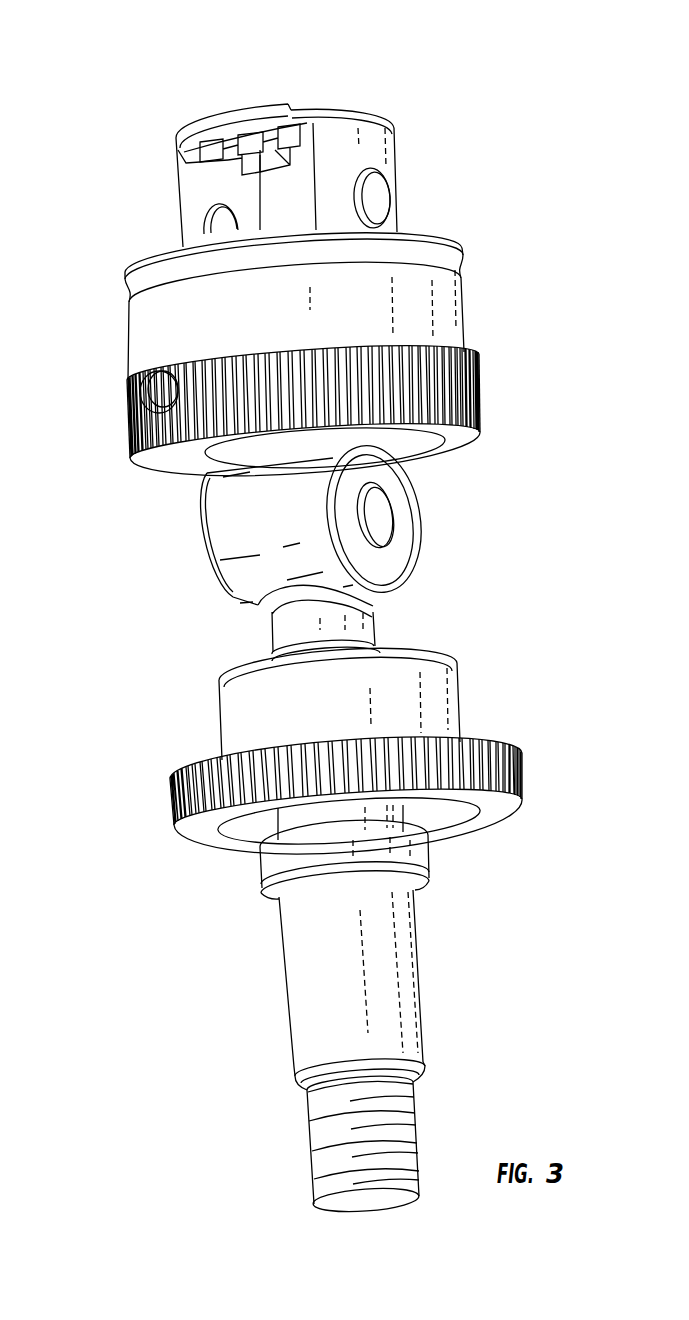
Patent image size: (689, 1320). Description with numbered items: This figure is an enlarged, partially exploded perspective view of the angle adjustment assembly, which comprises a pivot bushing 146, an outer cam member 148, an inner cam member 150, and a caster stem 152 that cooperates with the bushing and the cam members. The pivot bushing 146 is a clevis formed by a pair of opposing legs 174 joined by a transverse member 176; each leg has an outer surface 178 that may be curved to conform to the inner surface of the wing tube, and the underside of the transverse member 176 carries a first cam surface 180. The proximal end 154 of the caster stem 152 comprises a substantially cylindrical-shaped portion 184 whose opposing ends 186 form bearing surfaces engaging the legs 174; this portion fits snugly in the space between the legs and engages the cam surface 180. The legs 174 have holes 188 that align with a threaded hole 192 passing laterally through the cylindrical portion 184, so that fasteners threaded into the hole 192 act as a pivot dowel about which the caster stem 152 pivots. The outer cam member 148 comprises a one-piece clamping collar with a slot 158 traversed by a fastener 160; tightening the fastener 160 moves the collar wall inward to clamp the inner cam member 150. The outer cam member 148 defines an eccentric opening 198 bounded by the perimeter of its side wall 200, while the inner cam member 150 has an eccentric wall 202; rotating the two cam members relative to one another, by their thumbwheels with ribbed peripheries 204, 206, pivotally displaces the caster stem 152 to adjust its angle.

The pivot bushing 146 is at (288, 147).
The outer cam member 148 is at (311, 370).
The inner cam member 150 is at (412, 751).
The caster stem 152 is at (200, 929).
The proximal end 154 is at (322, 549).
The slot 158 is at (163, 460).
The fastener 160 is at (160, 393).
The legs 174 is at (388, 168).
The transverse member 176 is at (297, 96).
The outer surface 178 is at (370, 137).
The first cam surface 180 is at (212, 184).
The substantially cylindrical-shaped portion 184 is at (233, 568).
The opposing ends 186 is at (197, 528).
The holes 188 is at (363, 198).
The threaded hole 192 is at (370, 527).
The eccentric opening 198 is at (450, 424).
The side wall 200 is at (460, 441).
The eccentric wall 202 is at (447, 692).
The ribbed periphery 204 is at (477, 375).
The ribbed periphery 206 is at (520, 787).